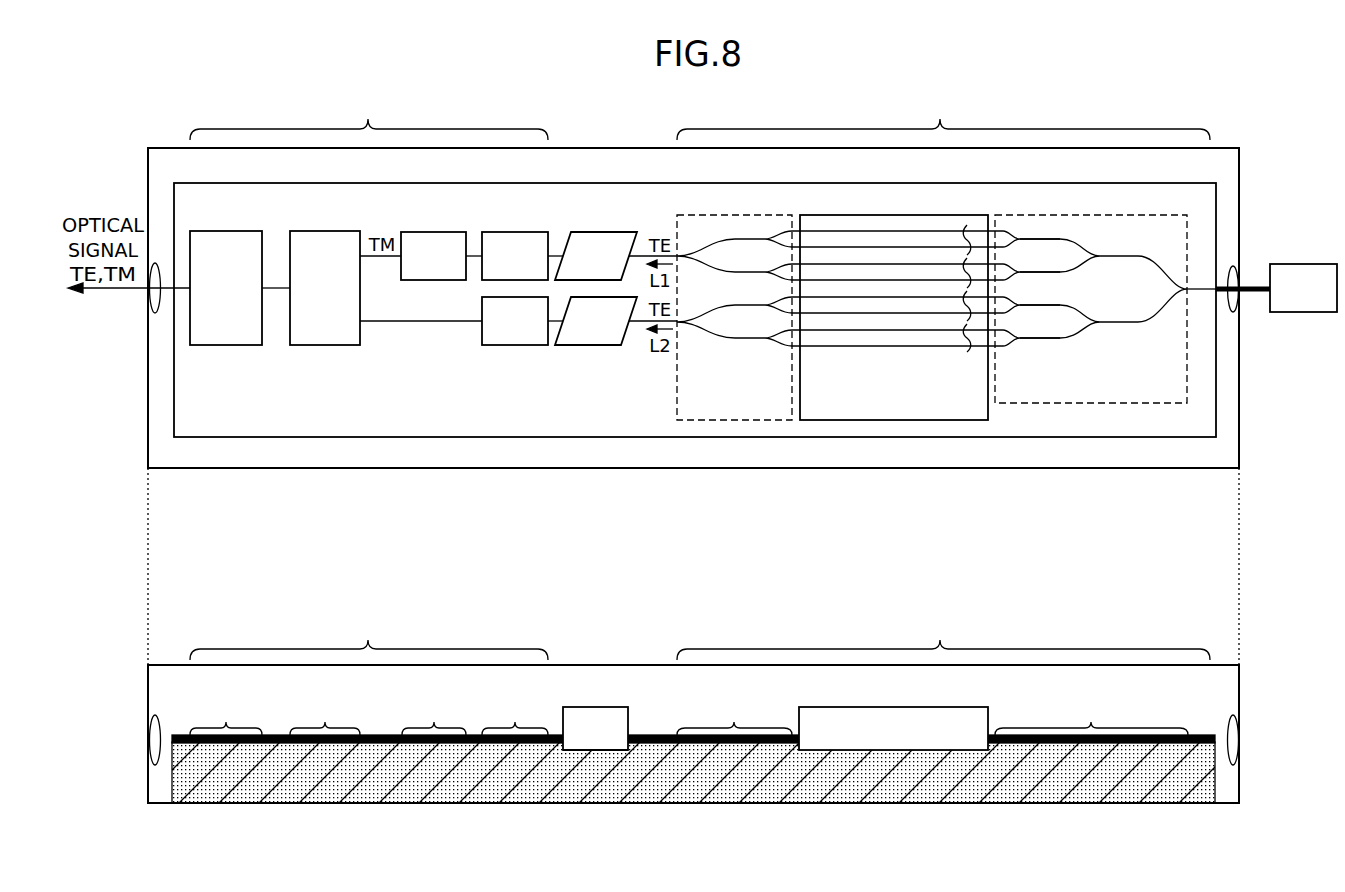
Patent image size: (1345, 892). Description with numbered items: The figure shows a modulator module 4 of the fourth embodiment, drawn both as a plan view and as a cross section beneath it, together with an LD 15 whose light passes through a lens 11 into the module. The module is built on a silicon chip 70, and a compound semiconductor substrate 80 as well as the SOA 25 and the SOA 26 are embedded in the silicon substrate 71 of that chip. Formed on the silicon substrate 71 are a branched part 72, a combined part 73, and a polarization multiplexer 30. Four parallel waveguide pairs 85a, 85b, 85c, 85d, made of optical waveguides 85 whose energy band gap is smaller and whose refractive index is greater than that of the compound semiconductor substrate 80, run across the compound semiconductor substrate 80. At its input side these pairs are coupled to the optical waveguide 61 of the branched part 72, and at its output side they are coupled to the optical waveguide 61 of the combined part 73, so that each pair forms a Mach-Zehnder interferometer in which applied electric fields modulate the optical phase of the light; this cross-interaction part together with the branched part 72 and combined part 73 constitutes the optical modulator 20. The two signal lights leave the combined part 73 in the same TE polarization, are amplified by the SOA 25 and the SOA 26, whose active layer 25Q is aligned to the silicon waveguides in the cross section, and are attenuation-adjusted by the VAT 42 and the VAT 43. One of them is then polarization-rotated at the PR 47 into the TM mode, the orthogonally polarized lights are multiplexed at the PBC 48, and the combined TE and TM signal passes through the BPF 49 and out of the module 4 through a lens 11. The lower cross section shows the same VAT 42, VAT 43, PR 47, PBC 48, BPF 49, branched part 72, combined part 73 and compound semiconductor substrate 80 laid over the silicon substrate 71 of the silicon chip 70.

The modulator module 4 is at (1216, 150).
The lens 11 is at (1238, 302).
The laser diode (LD) 15 is at (1300, 264).
The optical modulator 20 is at (943, 377).
The SOA 25 is at (603, 232).
The active layer 25Q is at (597, 750).
The SOA 26 is at (590, 345).
The polarization multiplexer 30 is at (369, 389).
The VAT 42 is at (518, 232).
The VAT 43 is at (520, 345).
The PR 47 is at (437, 232).
The PBC 48 is at (328, 231).
The BPF 49 is at (228, 231).
The optical waveguide 61 is at (178, 280).
The silicon chip 70 is at (1093, 183).
The silicon substrate 71 is at (1207, 387).
The branched part 72 is at (1125, 215).
The combined part 73 is at (752, 215).
The compound semiconductor substrate 80 is at (925, 215).
The optical waveguides 85 is at (850, 740).
The parallel waveguide pair 85a is at (1005, 249).
The parallel waveguide pair 85b is at (1005, 282).
The parallel waveguide pair 85c is at (1005, 315).
The parallel waveguide pair 85d is at (1005, 348).